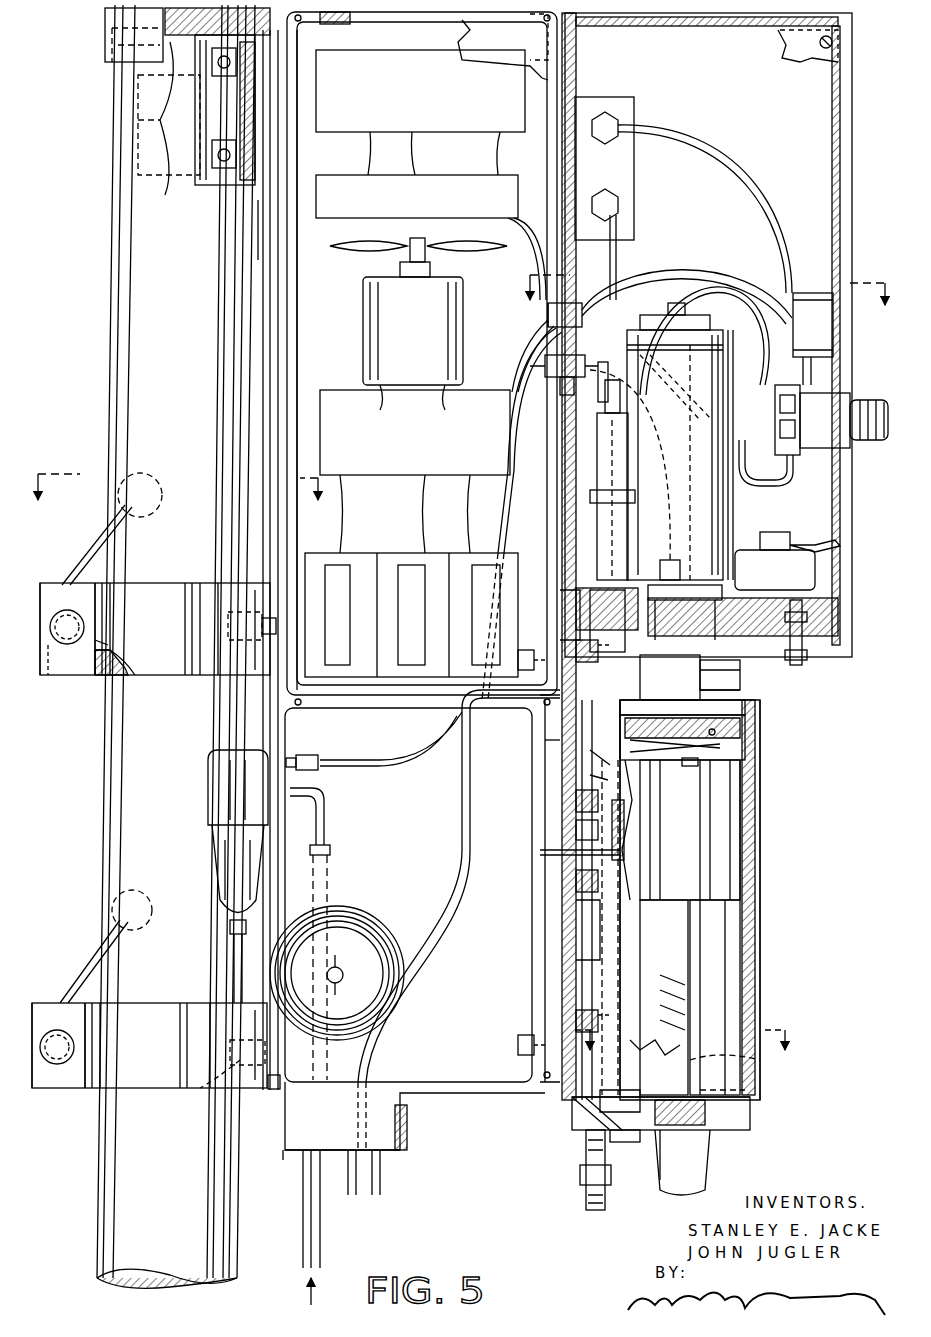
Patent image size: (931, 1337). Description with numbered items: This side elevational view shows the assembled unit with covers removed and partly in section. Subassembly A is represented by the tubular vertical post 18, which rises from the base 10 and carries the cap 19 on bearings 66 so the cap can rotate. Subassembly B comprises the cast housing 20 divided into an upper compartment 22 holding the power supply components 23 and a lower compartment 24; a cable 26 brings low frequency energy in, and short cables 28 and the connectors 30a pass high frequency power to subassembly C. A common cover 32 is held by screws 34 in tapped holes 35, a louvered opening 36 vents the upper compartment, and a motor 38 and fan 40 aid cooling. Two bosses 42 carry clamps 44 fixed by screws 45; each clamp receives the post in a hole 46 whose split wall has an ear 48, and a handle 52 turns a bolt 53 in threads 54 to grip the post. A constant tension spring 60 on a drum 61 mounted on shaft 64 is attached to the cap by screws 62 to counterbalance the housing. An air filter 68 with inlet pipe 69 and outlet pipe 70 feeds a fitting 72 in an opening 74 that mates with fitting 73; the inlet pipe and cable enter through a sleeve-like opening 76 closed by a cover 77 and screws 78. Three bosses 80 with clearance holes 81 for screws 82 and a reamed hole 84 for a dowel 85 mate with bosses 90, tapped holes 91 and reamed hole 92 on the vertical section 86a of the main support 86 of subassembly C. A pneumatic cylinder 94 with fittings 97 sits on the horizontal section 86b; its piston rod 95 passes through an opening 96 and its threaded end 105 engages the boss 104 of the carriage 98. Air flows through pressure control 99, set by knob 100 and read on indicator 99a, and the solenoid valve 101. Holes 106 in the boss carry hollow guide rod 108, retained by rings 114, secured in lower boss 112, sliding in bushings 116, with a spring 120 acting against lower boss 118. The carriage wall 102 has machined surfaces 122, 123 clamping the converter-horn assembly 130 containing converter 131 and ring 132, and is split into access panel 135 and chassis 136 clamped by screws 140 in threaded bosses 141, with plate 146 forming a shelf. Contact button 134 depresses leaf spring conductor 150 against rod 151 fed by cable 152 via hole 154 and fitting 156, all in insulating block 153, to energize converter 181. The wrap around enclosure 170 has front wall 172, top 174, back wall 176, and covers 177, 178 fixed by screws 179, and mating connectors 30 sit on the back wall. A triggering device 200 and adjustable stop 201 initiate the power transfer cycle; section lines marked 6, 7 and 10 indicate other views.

The vertical post 18 is at (170, 349).
The cap 19 is at (108, 28).
The housing 20 is at (282, 405).
The upper compartment 22 is at (318, 331).
The electrical power supply components 23 is at (312, 430).
The lower compartment 24 is at (385, 820).
The cable 26 is at (382, 1175).
The short cables 28 is at (515, 345).
The mating connector 30 is at (585, 312).
The connector 30a is at (546, 308).
The cover 32 is at (490, 62).
The screws 34 is at (540, 26).
The tapped holes 35 is at (302, 22).
The louvered opening 36 is at (408, 26).
The motor 38 is at (395, 327).
The fan 40 is at (368, 252).
The bosses 42 is at (254, 662).
The clamp 44 is at (160, 586).
The screws 45 is at (250, 620).
The hole 46 is at (110, 672).
The ear 48 is at (50, 586).
The handle 52 is at (143, 472).
The bolt 53 is at (68, 632).
The threads 54 is at (55, 670).
The constant tension spring 60 is at (265, 245).
The drum 61 is at (346, 990).
The screws 62 is at (300, 36).
The shaft 64 is at (340, 966).
The bearings 66 is at (218, 155).
The air filter 68 is at (222, 790).
The inlet pipe 69 is at (327, 850).
The outlet pipe 70 is at (320, 757).
The fitting 72 is at (545, 364).
The fitting 73 is at (572, 380).
The opening 74 is at (538, 300).
The sleeve-like opening 76 is at (405, 1135).
The cover 77 is at (402, 1150).
The screws 78 is at (283, 1156).
The bosses 80 is at (545, 718).
The clearance holes 81 is at (540, 712).
The attaching screws 82 is at (516, 660).
The reamed hole 84 is at (574, 878).
The dowel 85 is at (538, 852).
The main support 86 is at (565, 592).
The vertical section 86a is at (575, 930).
The horizontal section 86b is at (818, 572).
The bosses 90 is at (575, 648).
The tapped holes 91 is at (575, 662).
The reamed hole 92 is at (575, 830).
The pneumatic cylinder 94 is at (686, 482).
The piston rod 95 is at (690, 430).
The opening 96 is at (688, 600).
The fittings 97 is at (672, 308).
The carriage 98 is at (770, 925).
The pressure control 99 is at (777, 420).
The pressure indicator 99a is at (812, 290).
The knob 100 is at (866, 398).
The solenoid operated four-way valve 101 is at (620, 108).
The carriage wall 102 is at (757, 762).
The boss 104 is at (655, 690).
The threaded end 105 is at (698, 692).
The spaced holes 106 is at (560, 752).
The guide rod 108 is at (600, 456).
The lower boss 112 is at (600, 1135).
The retaining rings 114 is at (635, 762).
The bushings 116 is at (602, 590).
The lower boss 118 is at (575, 1100).
The spring 120 is at (670, 995).
The machined surface 122 is at (742, 788).
The machined surface 123 is at (750, 1100).
The converter-horn assembly 130 is at (760, 835).
The electro-acoustic converter 131 is at (662, 837).
The support ring 132 is at (715, 1128).
The electrical contact button 134 is at (688, 770).
The swing-open access panel 135 is at (687, 925).
The chassis 136 is at (640, 925).
The captive clamping screws 140 is at (685, 1132).
The threaded bosses 141 is at (640, 1090).
The arcuate shaped plate 146 is at (652, 1140).
The leaf spring conductor 150 is at (745, 750).
The rod 151 is at (742, 733).
The electrical cable 152 is at (645, 346).
The block 153 is at (742, 715).
The hole 154 is at (560, 740).
The fitting 156 is at (636, 425).
The wrap around enclosure 170 is at (858, 150).
The front wall 172 is at (843, 108).
The top 174 is at (722, 30).
The back wall 176 is at (580, 82).
The cover 177 is at (812, 52).
The cover 178 is at (720, 124).
The screws 179 is at (833, 42).
The converter 181 is at (356, 1190).
The triggering device 200 is at (808, 645).
The adjustable stop 201 is at (586, 1188).
The section line 6 is at (703, 273).
The section line 7 is at (679, 1026).
The base 10 is at (176, 502).
The subassembly A is at (150, 1171).
The subassembly B is at (492, 1212).
The subassembly C is at (815, 1130).